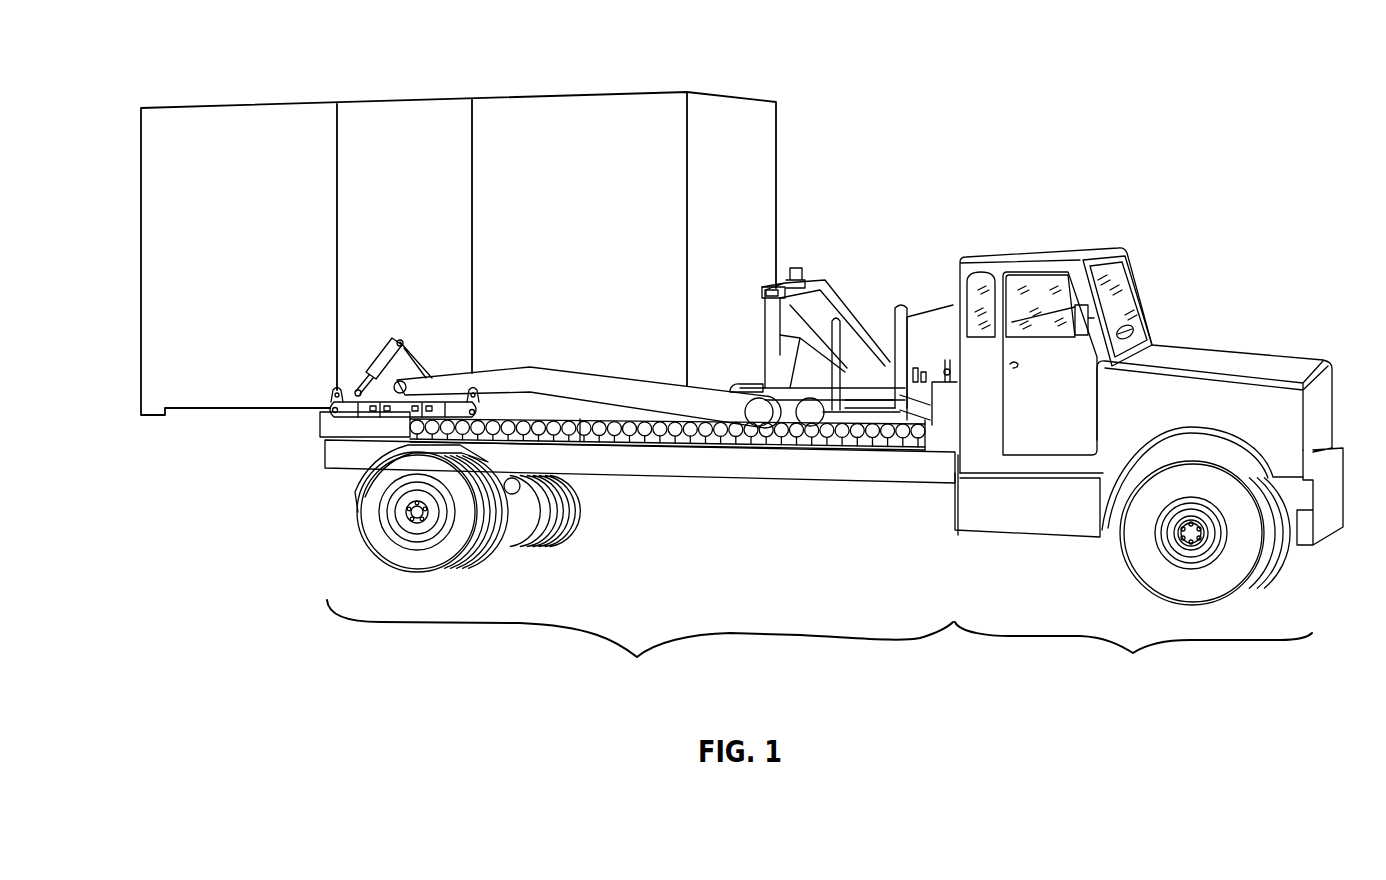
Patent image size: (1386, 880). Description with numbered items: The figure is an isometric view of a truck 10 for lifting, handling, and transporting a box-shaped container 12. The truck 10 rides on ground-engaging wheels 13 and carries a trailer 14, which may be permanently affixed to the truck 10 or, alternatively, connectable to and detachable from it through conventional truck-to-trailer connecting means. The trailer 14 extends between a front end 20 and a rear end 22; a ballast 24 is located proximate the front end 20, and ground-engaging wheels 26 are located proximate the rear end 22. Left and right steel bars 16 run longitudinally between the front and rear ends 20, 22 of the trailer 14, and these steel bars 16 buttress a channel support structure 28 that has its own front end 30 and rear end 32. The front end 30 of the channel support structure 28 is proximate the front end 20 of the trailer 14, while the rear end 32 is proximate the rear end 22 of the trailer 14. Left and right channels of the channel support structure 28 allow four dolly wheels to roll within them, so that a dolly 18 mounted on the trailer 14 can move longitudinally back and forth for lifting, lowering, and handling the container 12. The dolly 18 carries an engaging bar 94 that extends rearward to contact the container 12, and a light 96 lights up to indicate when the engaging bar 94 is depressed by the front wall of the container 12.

The truck 10 is at (1149, 466).
The container 12 is at (406, 104).
The ground-engaging wheels 13 is at (1278, 545).
The trailer 14 is at (640, 643).
The steel bars 16 is at (604, 466).
The dolly 18 is at (832, 270).
The front end 20 is at (938, 475).
The rear end 22 is at (346, 462).
The ballast 24 is at (945, 398).
The ground-engaging wheels 26 is at (425, 575).
The channel support structure 28 is at (716, 441).
The front end 30 is at (910, 447).
The rear end 32 is at (318, 425).
The engaging bar 94 is at (762, 380).
The light 96 is at (795, 268).